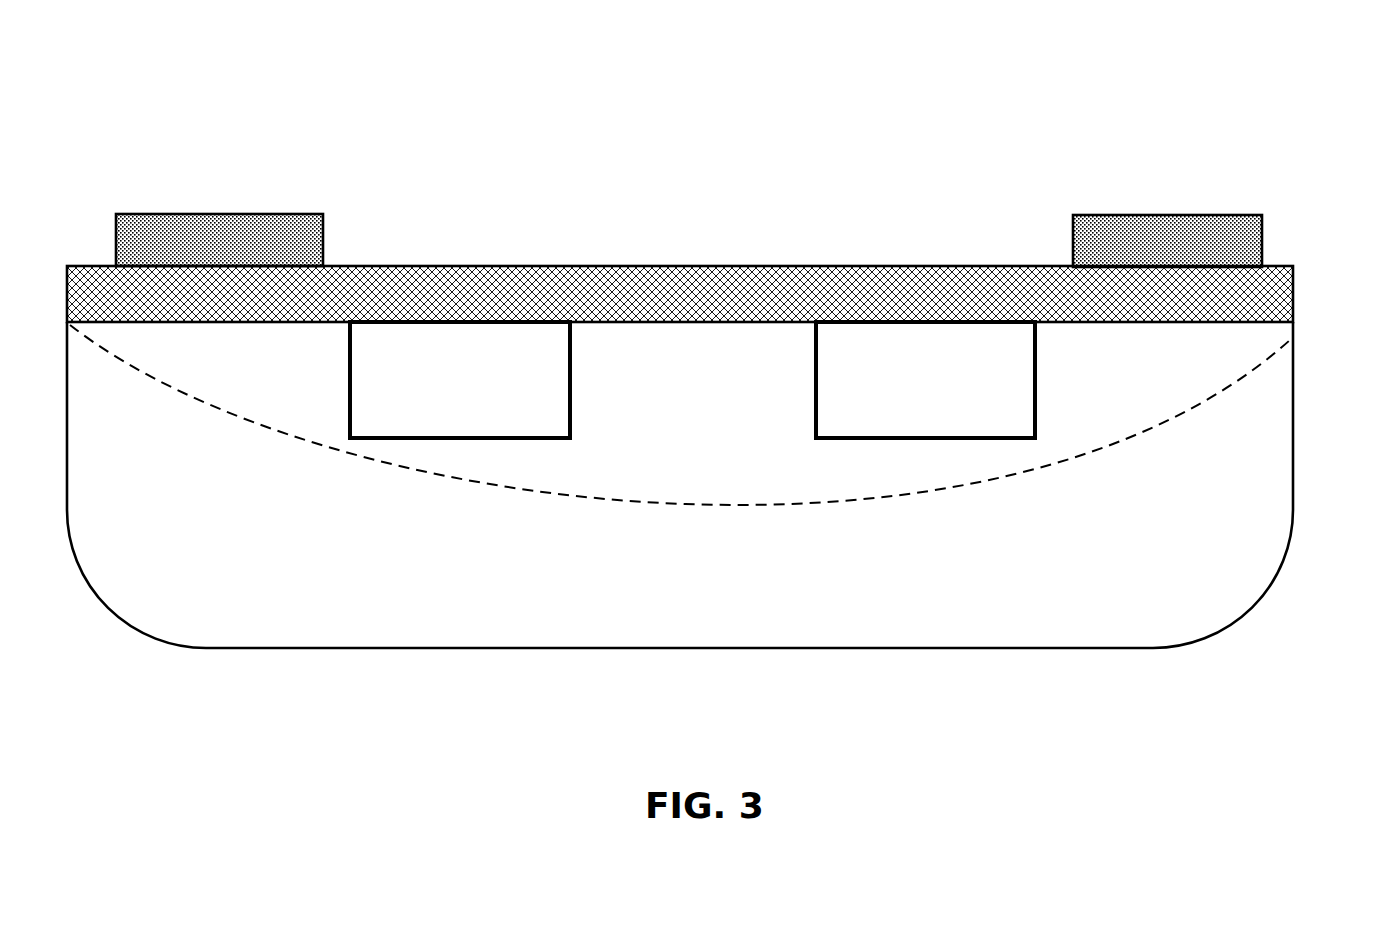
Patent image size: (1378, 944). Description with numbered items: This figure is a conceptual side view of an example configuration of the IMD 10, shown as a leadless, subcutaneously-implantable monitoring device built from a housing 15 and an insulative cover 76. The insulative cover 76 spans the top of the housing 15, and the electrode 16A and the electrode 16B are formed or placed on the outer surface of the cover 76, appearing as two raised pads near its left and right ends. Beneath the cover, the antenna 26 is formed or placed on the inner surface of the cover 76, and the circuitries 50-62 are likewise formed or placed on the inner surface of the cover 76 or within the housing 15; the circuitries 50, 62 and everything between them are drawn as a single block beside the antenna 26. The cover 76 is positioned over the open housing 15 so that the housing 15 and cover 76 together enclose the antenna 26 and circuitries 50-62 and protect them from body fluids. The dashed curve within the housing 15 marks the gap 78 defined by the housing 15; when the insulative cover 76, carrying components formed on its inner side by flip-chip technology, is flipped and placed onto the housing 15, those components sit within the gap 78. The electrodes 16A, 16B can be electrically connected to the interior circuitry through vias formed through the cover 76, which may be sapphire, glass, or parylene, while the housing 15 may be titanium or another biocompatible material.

The IMD 10 is at (1270, 168).
The housing 15 is at (727, 607).
The electrode 16A is at (310, 213).
The electrode 16B is at (1080, 212).
The antenna 26 is at (474, 406).
The circuitries 50-62 is at (925, 380).
The circuitries 50 is at (925, 380).
The circuitries 62 is at (958, 406).
The insulative cover 76 is at (805, 265).
The gap 78 is at (1082, 456).